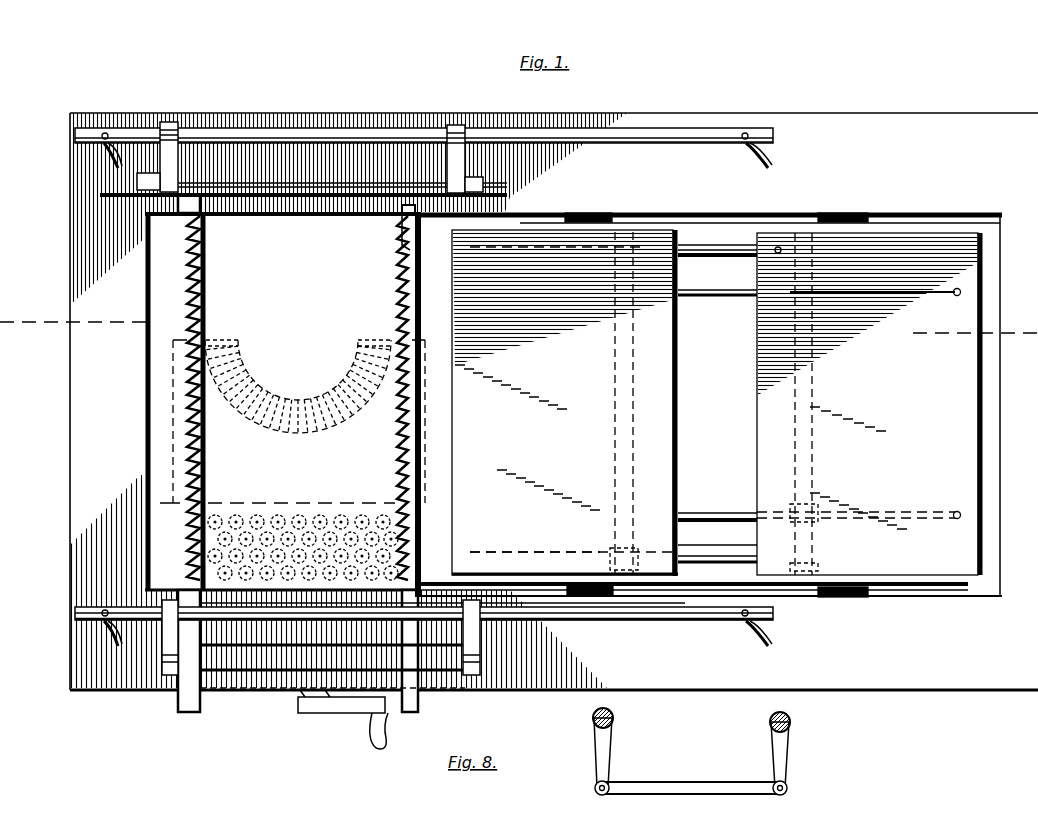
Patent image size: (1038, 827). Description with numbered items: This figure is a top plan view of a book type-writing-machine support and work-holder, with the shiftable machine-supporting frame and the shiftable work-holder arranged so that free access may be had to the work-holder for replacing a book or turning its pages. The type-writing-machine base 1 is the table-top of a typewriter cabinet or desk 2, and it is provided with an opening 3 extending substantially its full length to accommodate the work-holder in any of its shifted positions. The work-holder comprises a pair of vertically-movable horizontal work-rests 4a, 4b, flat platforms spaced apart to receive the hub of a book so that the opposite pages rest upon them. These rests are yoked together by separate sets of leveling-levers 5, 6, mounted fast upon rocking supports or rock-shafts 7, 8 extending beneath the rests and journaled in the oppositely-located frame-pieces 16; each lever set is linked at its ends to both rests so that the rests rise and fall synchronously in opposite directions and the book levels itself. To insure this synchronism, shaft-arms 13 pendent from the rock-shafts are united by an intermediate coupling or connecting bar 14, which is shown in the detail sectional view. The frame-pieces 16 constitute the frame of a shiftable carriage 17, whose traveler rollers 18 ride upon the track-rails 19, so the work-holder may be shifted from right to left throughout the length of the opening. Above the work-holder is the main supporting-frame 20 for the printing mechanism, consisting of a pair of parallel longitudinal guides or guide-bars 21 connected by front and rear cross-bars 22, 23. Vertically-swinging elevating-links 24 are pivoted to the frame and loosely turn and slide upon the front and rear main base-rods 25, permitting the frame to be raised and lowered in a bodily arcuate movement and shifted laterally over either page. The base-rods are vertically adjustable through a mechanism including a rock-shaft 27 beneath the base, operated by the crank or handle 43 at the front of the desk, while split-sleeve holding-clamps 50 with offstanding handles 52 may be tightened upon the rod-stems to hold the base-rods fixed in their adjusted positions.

In FIG. 1, the type-writing-machine base 1 is at (70, 390).
In FIG. 1, the typewriter cabinet or desk 2 is at (708, 377).
In FIG. 1, the opening 3 is at (519, 319).
In FIG. 1, the work-rest 4a is at (565, 403).
In FIG. 1, the work-rest 4b is at (868, 404).
In FIG. 1, the leveling-levers 5 is at (712, 258).
In FIG. 1, the leveling-levers 6 is at (713, 298).
In FIG. 1, the rocking support or shaft 7 is at (633, 423).
In FIG. 8, the rocking support or shaft 7 is at (614, 717).
In FIG. 1, the rocking support or shaft 8 is at (795, 455).
In FIG. 8, the rocking support or shaft 8 is at (792, 720).
In FIG. 1, the shaft-arms 13 is at (644, 562).
In FIG. 8, the shaft-arms 13 is at (616, 745).
In FIG. 1, the coupling or connecting bar 14 is at (762, 566).
In FIG. 8, the coupling or connecting bar 14 is at (704, 782).
In FIG. 1, the frame-pieces 16 is at (748, 213).
In FIG. 1, the shiftable carriage 17 is at (717, 386).
In FIG. 1, the traveler rollers 18 is at (612, 214).
In FIG. 1, the track-rails 19 is at (337, 214).
In FIG. 1, the main supporting-frame 20 is at (359, 431).
In FIG. 1, the longitudinal guides or guide-bars 21 is at (205, 300).
In FIG. 1, the front cross-bar 22 is at (250, 690).
In FIG. 1, the rear cross-bar 23 is at (268, 215).
In FIG. 1, the elevating-links 24 is at (178, 160).
In FIG. 1, the main base-rods 25 is at (378, 133).
In FIG. 1, the rock-shaft 27 is at (205, 462).
In FIG. 1, the crank or handle 43 is at (350, 715).
In FIG. 1, the holding-clamps 50 is at (110, 132).
In FIG. 1, the offstanding handles 52 is at (110, 158).